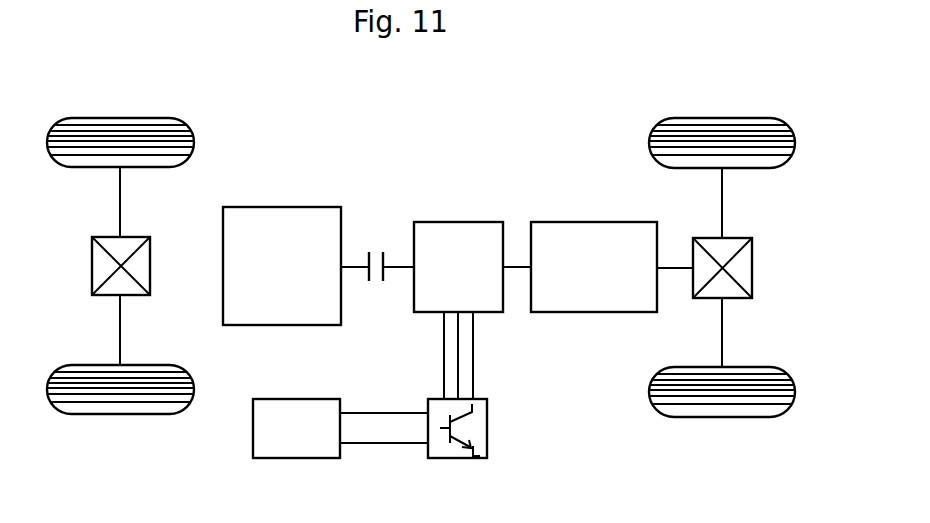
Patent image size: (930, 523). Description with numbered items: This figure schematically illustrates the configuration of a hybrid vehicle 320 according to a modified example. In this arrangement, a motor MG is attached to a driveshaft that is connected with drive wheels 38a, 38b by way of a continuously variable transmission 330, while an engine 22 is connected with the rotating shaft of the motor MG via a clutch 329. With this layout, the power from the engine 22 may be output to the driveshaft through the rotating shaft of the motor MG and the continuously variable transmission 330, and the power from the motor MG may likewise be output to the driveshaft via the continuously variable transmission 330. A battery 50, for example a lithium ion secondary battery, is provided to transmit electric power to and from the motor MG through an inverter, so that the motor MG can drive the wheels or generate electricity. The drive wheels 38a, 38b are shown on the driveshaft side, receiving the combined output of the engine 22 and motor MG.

The hybrid vehicle 320 is at (534, 64).
The engine 22 is at (283, 207).
The clutch 329 is at (378, 250).
The motor MG is at (459, 222).
The continuously variable transmission 330 is at (576, 222).
The drive wheel 38a is at (720, 118).
The drive wheel 38b is at (720, 417).
The battery 50 is at (297, 399).